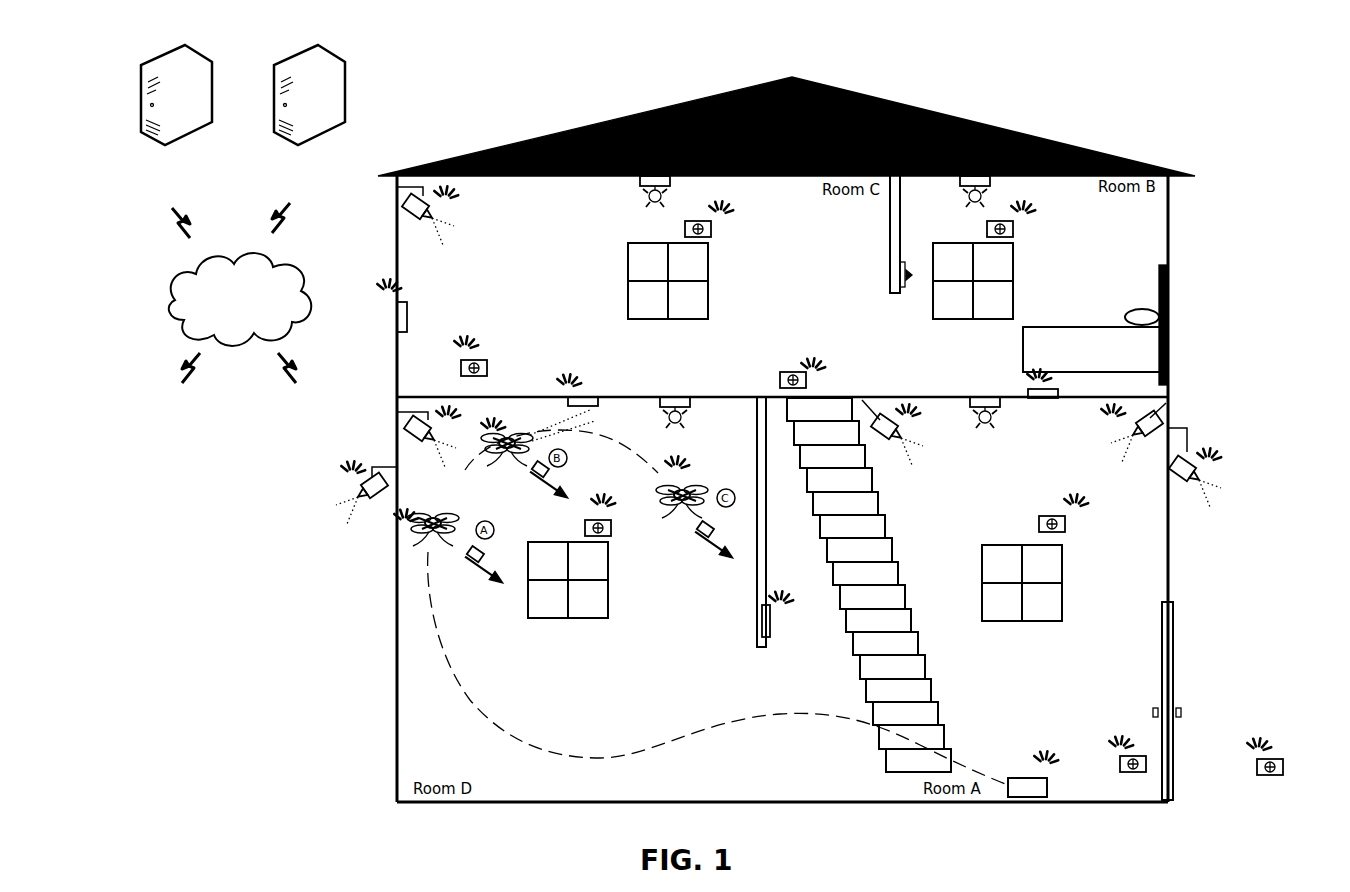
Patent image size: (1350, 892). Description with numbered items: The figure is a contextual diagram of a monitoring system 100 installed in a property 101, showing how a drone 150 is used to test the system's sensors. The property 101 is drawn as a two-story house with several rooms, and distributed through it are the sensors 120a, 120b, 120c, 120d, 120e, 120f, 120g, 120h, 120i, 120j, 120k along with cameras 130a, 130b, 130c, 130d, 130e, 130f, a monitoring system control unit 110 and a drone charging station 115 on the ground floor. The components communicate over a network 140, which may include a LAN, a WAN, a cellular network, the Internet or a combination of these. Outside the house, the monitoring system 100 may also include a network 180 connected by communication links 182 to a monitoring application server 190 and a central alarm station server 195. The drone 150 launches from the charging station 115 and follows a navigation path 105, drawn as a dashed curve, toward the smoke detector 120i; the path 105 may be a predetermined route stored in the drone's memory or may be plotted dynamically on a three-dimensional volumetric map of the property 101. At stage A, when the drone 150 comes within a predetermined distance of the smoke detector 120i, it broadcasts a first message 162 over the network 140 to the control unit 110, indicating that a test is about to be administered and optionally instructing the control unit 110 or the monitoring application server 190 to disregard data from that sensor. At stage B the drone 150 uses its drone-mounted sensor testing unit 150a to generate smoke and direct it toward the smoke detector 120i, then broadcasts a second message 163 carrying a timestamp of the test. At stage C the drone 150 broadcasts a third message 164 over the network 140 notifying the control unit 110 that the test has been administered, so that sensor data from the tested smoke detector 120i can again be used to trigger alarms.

The monitoring system 100 is at (472, 68).
The property 101 is at (1100, 150).
The navigation path 105 is at (497, 722).
The monitoring system control unit 110 is at (770, 625).
The drone charging station 115 is at (1012, 790).
The sensor 120a is at (1120, 770).
The sensor 120b is at (1065, 526).
The sensor 120c is at (1050, 390).
The sensor 120d is at (1014, 232).
The sensor 120e is at (806, 380).
The sensor 120f is at (712, 232).
The sensor 120g is at (408, 312).
The sensor 120h is at (488, 368).
The smoke detector 120i is at (592, 397).
The sensor 120j is at (611, 530).
The sensor 120k is at (1283, 765).
The camera 130a is at (877, 440).
The camera 130b is at (1160, 422).
The camera 130c is at (1175, 488).
The camera 130d is at (405, 222).
The camera 130e is at (405, 443).
The camera 130f is at (385, 500).
The network 140 is at (1250, 752).
The drone 150 is at (698, 485).
The drone-mounted sensor testing unit 150a is at (672, 508).
The first message 162 is at (480, 552).
The second message 163 is at (532, 482).
The third message 164 is at (715, 530).
The network 180 is at (184, 298).
The communication links 182 is at (282, 368).
The monitoring application server 190 is at (205, 58).
The central alarm station server 195 is at (335, 58).